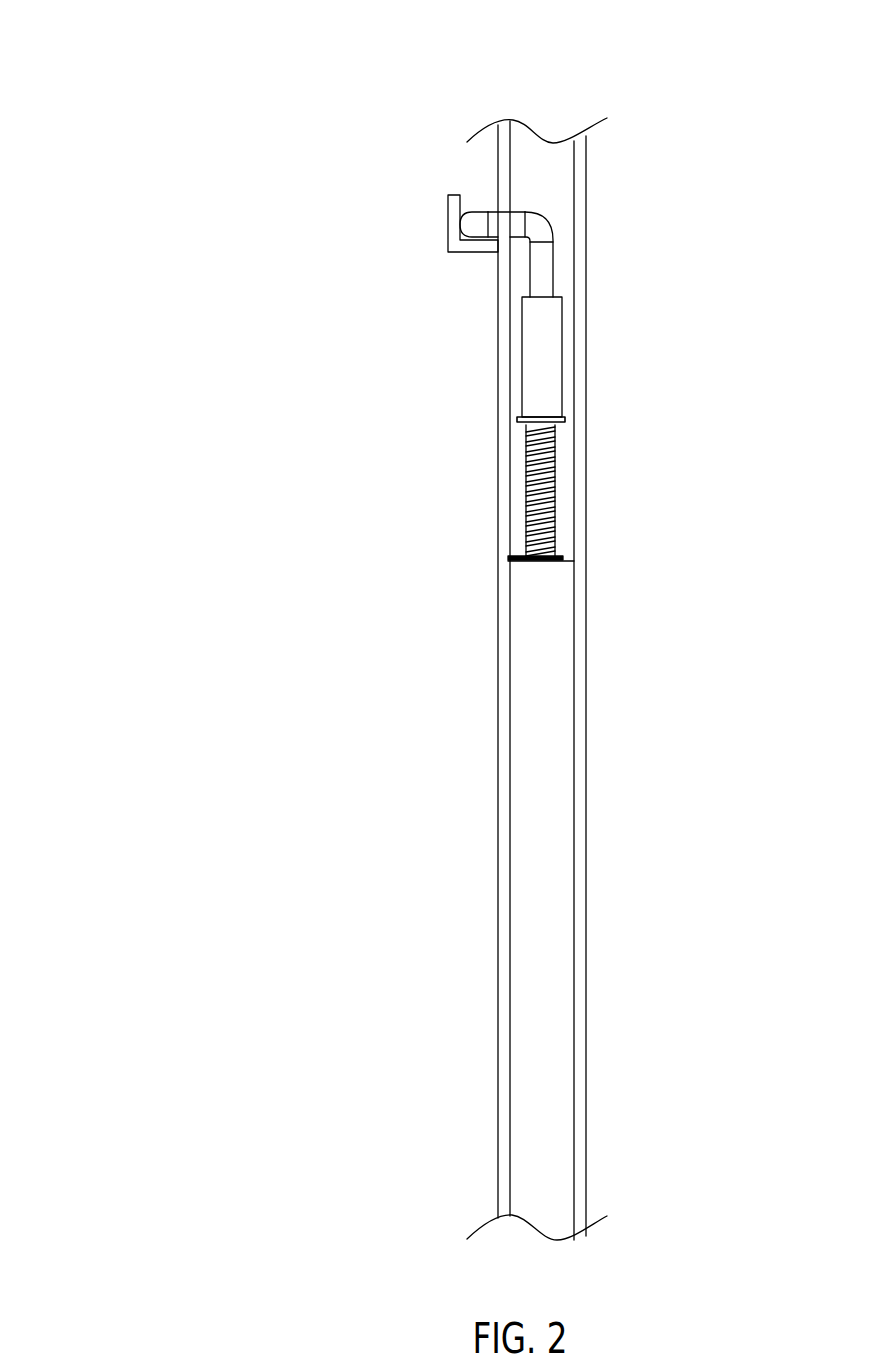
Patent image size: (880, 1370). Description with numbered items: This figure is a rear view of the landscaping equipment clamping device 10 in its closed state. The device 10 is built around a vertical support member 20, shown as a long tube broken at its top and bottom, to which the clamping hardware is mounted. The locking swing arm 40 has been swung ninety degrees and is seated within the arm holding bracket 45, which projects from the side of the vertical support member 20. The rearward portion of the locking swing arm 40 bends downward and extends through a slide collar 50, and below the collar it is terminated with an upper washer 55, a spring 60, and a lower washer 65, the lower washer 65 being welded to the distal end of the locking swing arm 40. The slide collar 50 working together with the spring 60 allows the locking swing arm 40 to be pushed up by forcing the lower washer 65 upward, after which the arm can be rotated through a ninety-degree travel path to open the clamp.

The landscaping equipment clamping device 10 is at (118, 188).
The vertical support member 20 is at (542, 788).
The locking swing arm 40 is at (540, 224).
The arm holding bracket 45 is at (455, 225).
The slide collar 50 is at (547, 333).
The upper washer 55 is at (563, 417).
The spring 60 is at (543, 500).
The lower washer 65 is at (565, 559).